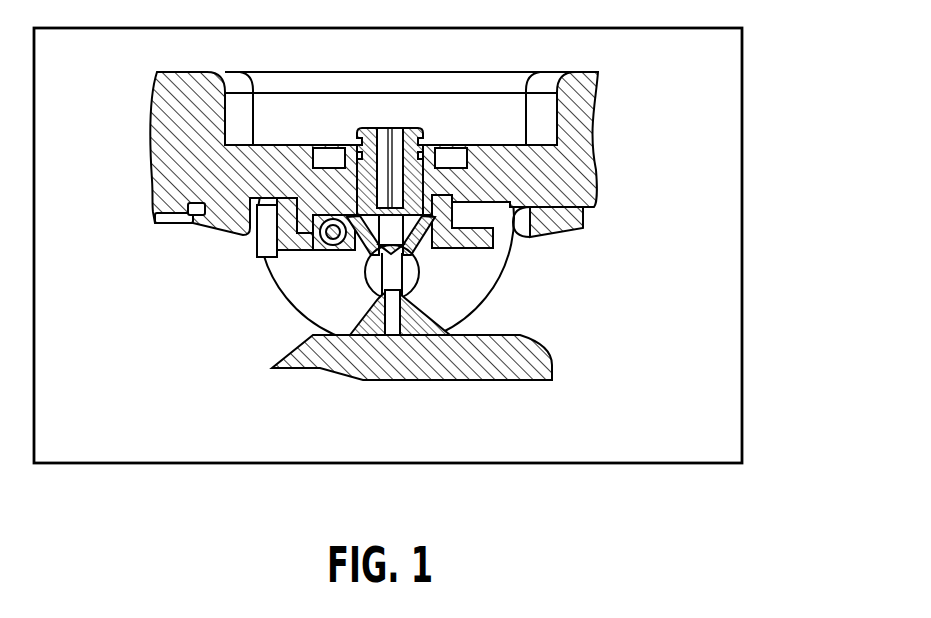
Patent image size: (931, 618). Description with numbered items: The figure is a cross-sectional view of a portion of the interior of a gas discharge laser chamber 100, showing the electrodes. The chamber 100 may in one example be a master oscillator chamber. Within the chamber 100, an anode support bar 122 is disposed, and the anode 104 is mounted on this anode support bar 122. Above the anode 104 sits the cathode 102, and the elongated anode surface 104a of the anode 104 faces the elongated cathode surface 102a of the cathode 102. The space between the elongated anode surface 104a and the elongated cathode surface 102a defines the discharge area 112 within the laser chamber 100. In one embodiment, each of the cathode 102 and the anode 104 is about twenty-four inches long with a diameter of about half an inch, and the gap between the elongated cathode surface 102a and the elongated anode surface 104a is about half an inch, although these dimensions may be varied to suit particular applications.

The chamber 100 is at (743, 83).
The cathode 102 is at (423, 201).
The elongated cathode surface 102a is at (368, 256).
The anode 104 is at (434, 315).
The elongated anode surface 104a is at (395, 290).
The discharge area 112 is at (368, 272).
The anode support bar 122 is at (553, 365).